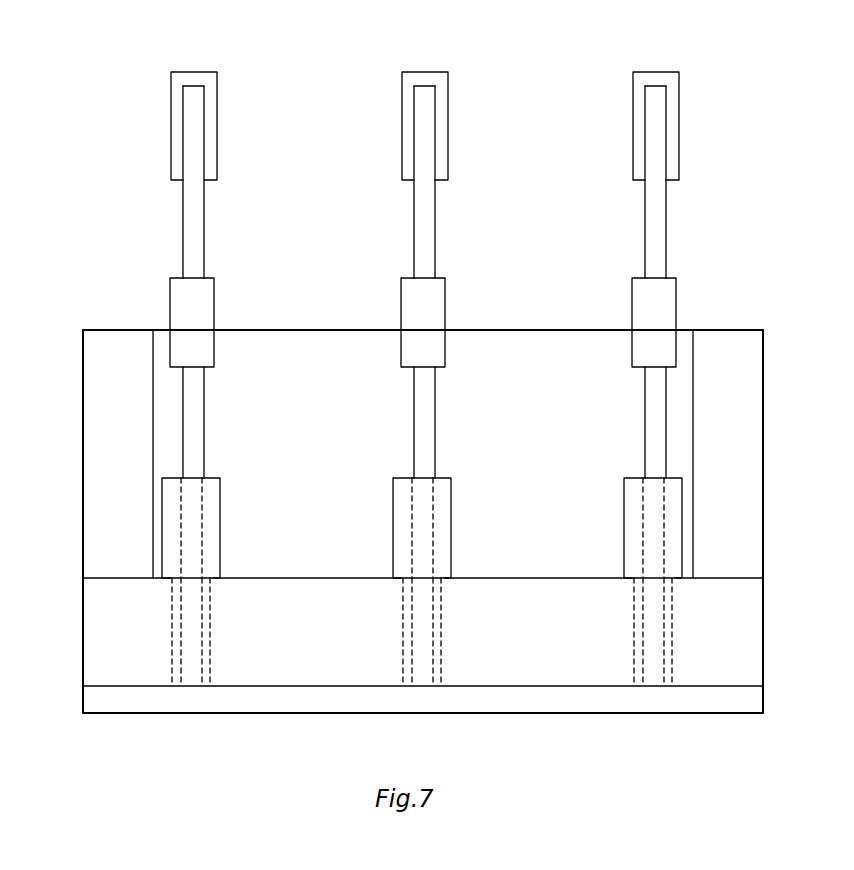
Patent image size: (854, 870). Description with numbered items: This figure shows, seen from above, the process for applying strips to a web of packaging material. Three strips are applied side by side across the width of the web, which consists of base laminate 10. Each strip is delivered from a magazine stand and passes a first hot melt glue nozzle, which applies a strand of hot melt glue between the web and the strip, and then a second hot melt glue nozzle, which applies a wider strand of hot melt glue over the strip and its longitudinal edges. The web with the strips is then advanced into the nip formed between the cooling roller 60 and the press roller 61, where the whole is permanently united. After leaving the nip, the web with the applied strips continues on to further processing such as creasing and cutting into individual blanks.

The base laminate 10 is at (295, 404).
The cooling roller 60 is at (102, 463).
The press roller 61 is at (270, 655).